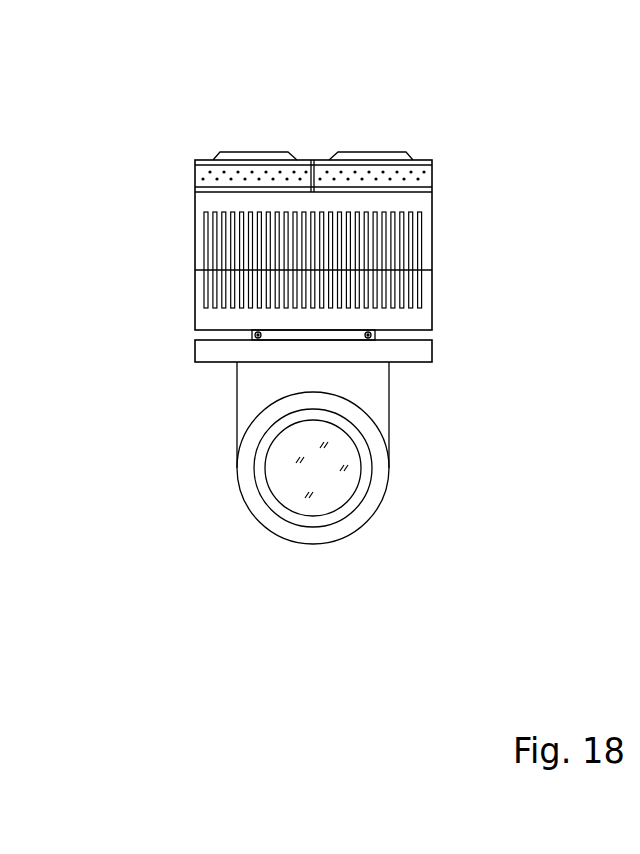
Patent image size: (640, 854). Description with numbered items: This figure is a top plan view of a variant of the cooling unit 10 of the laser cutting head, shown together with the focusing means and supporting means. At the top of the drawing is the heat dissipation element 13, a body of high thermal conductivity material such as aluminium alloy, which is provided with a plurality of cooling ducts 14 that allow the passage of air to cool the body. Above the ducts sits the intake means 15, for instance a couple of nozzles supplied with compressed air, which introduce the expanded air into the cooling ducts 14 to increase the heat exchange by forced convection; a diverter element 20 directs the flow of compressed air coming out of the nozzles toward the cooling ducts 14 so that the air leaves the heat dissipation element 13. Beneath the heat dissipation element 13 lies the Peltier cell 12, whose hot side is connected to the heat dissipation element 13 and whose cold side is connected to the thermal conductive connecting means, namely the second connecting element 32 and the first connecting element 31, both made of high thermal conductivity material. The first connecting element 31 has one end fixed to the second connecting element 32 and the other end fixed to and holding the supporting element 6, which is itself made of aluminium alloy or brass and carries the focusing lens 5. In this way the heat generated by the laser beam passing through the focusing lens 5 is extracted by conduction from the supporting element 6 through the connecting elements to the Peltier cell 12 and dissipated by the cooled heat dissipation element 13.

The cooling unit 10 is at (150, 129).
The diverter element 20 is at (432, 233).
The intake means 15 is at (322, 170).
The heat dissipation element 13 is at (195, 280).
The cooling ducts 14 is at (225, 288).
The Peltier cell 12 is at (347, 337).
The second connecting element 32 is at (222, 353).
The first connecting element 31 is at (260, 400).
The supporting element 6 is at (262, 510).
The focusing lens 5 is at (320, 477).